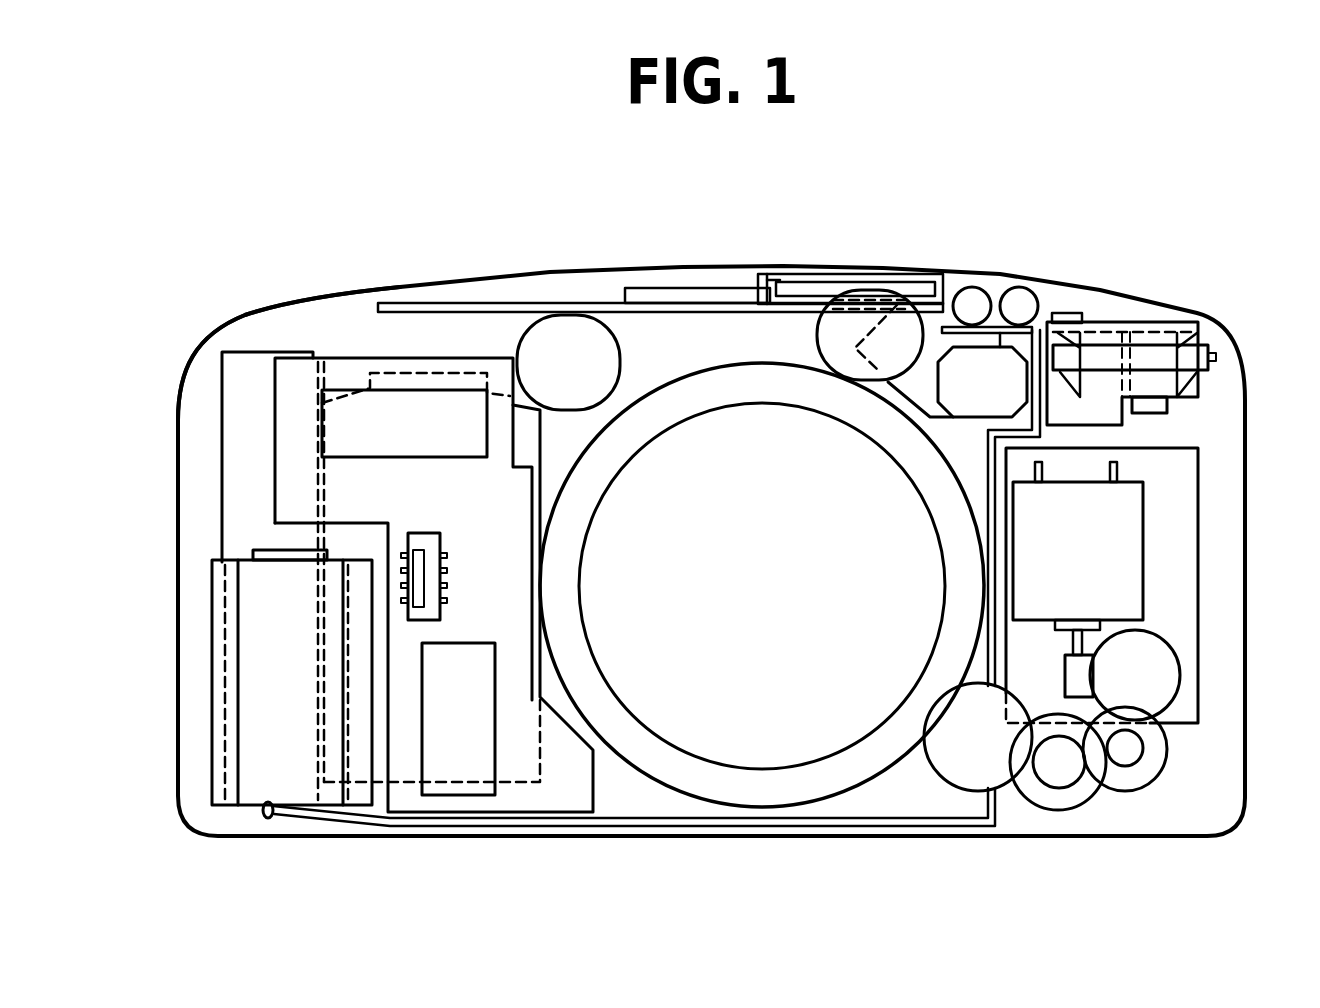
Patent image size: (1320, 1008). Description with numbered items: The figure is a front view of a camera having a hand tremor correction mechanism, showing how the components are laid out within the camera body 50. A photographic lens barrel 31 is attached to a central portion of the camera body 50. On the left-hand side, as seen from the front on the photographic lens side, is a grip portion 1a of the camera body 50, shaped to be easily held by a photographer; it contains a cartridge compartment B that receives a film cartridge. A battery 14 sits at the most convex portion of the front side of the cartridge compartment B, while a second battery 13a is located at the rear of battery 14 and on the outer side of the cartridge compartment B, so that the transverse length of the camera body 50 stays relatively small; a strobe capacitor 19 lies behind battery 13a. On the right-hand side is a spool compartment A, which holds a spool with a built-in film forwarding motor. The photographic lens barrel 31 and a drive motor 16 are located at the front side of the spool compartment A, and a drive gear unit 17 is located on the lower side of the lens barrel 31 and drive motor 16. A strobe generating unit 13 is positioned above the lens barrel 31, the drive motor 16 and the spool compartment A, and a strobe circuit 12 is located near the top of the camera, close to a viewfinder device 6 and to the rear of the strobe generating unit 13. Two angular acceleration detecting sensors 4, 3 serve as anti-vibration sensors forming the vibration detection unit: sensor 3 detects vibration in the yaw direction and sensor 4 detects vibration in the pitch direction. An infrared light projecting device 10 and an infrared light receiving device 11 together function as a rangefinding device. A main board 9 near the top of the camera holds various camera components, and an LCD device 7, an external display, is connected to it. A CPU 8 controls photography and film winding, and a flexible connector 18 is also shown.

The grip portion 1a is at (230, 328).
The angular acceleration detecting sensor 3 is at (462, 773).
The angular acceleration detecting sensor 4 is at (347, 403).
The viewfinder device 6 is at (955, 290).
The LCD device 7 is at (883, 280).
The CPU 8 is at (700, 292).
The main board 9 is at (410, 303).
The infrared light projecting device 10 is at (835, 320).
The infrared light receiving device 11 is at (563, 330).
The strobe circuit 12 is at (1022, 327).
The strobe generating unit 13 is at (1185, 330).
The battery 13a is at (213, 567).
The battery 14 is at (257, 787).
The drive motor 16 is at (1135, 580).
The drive gear unit 17 is at (1142, 777).
The flexible connector 18 is at (415, 533).
The strobe capacitor 19 is at (238, 377).
The photographic lens barrel 31 is at (738, 793).
The camera body 50 is at (1227, 793).
The spool compartment A is at (1183, 480).
The cartridge compartment B is at (387, 377).